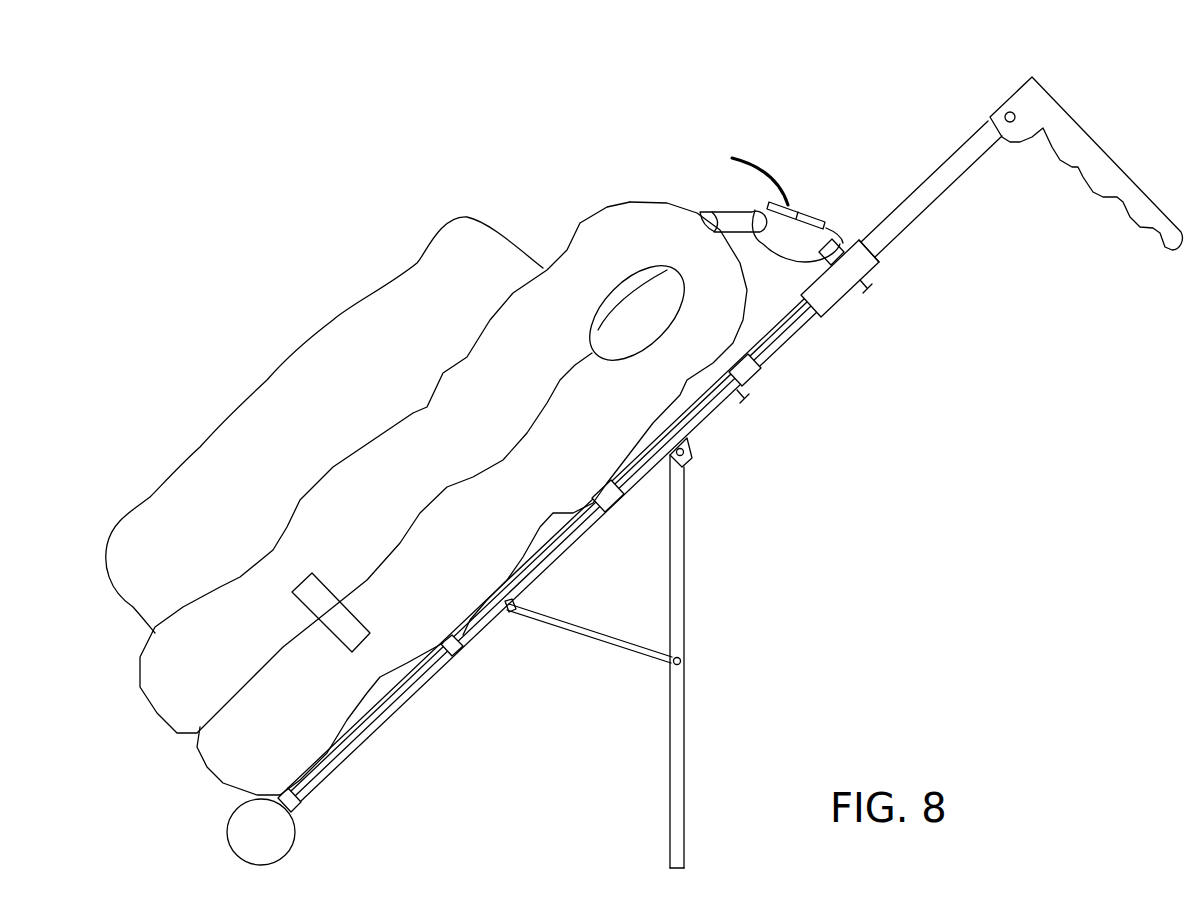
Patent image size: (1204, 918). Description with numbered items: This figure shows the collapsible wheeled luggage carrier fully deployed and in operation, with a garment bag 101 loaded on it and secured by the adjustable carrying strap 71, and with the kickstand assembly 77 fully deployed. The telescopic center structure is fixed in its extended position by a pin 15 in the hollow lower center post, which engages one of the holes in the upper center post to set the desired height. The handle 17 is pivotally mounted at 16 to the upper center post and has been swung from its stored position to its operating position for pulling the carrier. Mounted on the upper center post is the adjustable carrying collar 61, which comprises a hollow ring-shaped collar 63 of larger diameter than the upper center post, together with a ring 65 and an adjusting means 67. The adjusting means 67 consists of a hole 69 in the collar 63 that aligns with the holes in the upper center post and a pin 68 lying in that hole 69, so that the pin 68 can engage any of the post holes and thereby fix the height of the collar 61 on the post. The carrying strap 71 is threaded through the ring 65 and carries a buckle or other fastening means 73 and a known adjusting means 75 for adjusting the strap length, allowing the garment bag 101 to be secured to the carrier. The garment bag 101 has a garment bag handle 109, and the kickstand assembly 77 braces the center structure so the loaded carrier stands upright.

The pin 15 is at (748, 402).
The pivotal mounting 16 is at (1011, 123).
The handle 17 is at (1032, 87).
The adjustable carrying collar 61 is at (910, 263).
The hollow ring-shaped collar 63 is at (833, 310).
The ring 65 is at (837, 242).
The adjusting means 67 is at (910, 293).
The pin 68 is at (870, 290).
The hole 69 is at (860, 294).
The adjustable carrying strap 71 is at (792, 262).
The fastening means 73 is at (812, 215).
The adjusting means 75 is at (783, 200).
The kickstand assembly 77 is at (710, 657).
The garment bag 101 is at (650, 207).
The garment bag handle 109 is at (723, 218).